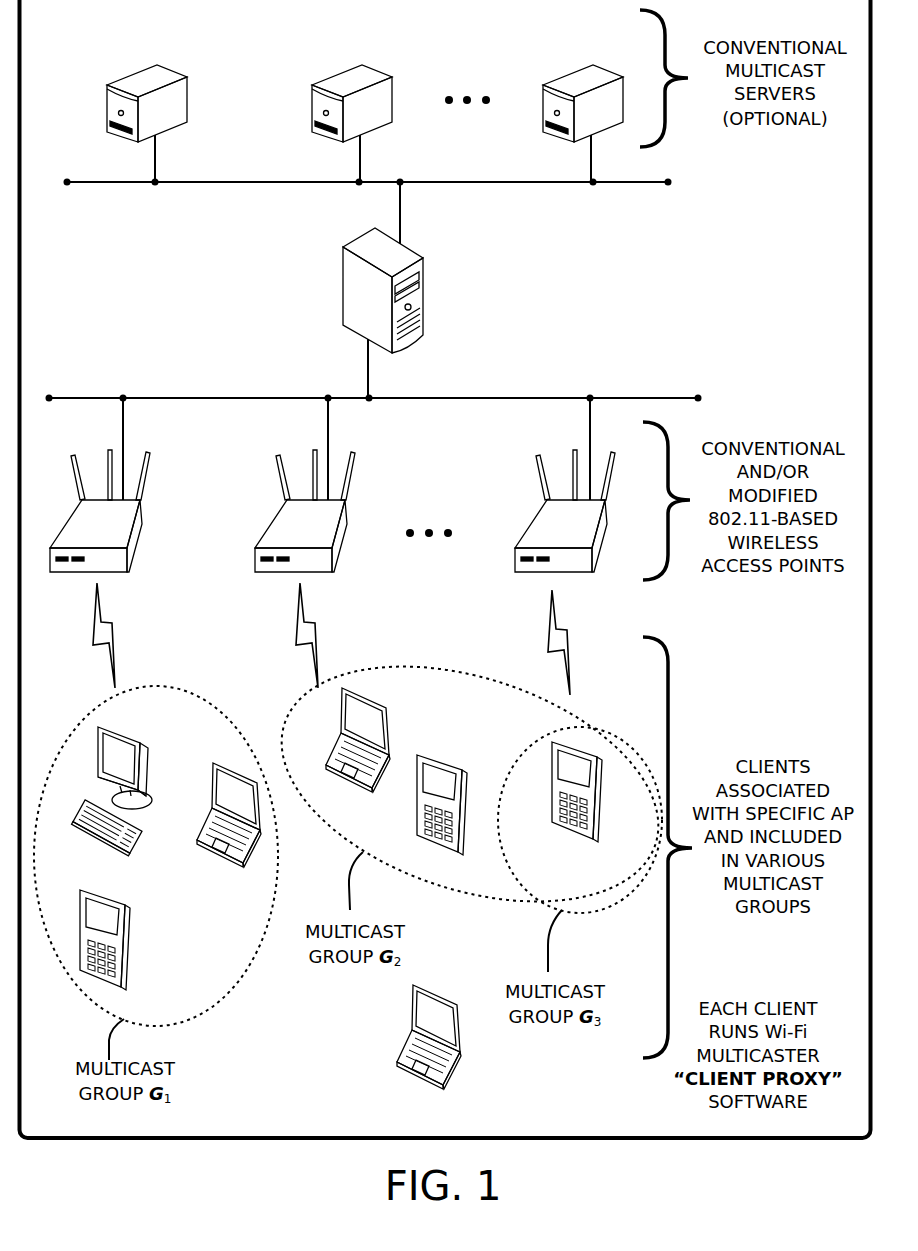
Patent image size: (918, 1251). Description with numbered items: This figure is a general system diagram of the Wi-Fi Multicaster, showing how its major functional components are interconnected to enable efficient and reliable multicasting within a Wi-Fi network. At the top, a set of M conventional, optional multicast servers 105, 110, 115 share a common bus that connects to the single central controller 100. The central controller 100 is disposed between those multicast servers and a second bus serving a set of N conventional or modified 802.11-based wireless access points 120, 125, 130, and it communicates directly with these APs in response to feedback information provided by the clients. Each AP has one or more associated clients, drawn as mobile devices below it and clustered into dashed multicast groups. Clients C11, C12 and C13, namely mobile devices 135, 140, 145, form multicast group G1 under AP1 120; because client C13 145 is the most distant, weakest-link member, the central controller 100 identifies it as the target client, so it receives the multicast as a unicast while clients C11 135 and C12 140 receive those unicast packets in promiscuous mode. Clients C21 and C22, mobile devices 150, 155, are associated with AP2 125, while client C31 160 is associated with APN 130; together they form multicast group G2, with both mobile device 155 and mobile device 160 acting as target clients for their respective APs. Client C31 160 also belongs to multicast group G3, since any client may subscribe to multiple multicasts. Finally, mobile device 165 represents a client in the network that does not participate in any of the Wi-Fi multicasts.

The central controller 100 is at (343, 282).
The conventional multicast server 105 is at (107, 97).
The conventional multicast server 110 is at (312, 97).
The conventional multicast server 115 is at (543, 113).
The access point 120 is at (143, 528).
The access point 125 is at (346, 548).
The access point 130 is at (515, 552).
The mobile device 135 is at (140, 740).
The mobile device 140 is at (231, 864).
The mobile device 145 is at (110, 893).
The mobile device 150 is at (330, 773).
The mobile device 155 is at (428, 837).
The mobile device 160 is at (590, 835).
The mobile device 165 is at (435, 1085).